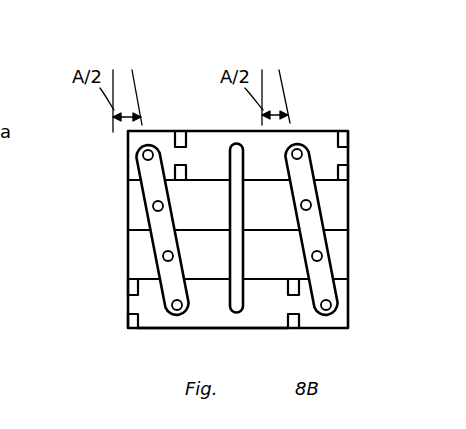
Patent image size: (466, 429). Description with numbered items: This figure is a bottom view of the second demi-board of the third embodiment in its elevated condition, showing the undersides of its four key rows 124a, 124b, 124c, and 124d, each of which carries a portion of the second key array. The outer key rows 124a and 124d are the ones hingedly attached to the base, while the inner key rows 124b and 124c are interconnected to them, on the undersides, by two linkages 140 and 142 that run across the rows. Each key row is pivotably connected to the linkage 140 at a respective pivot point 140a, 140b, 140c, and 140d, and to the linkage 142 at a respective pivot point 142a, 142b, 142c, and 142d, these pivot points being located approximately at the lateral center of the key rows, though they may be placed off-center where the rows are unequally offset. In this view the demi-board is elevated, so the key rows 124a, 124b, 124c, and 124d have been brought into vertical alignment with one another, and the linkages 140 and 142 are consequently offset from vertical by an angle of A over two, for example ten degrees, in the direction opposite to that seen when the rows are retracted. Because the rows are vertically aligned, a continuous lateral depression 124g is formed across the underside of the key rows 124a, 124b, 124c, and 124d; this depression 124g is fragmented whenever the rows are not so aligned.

The key row 124a is at (157, 330).
The key row 124b is at (128, 266).
The key row 124c is at (128, 213).
The key row 124d is at (330, 131).
The lateral depression 124g is at (231, 158).
The linkage 140 is at (120, 190).
The pivot point 140a is at (172, 306).
The pivot point 140b is at (125, 230).
The pivot point 140c is at (125, 230).
The pivot point 140d is at (120, 230).
The linkage 142 is at (351, 239).
The pivot point 142a is at (328, 306).
The pivot point 142b is at (351, 239).
The pivot point 142c is at (351, 239).
The pivot point 142d is at (351, 239).